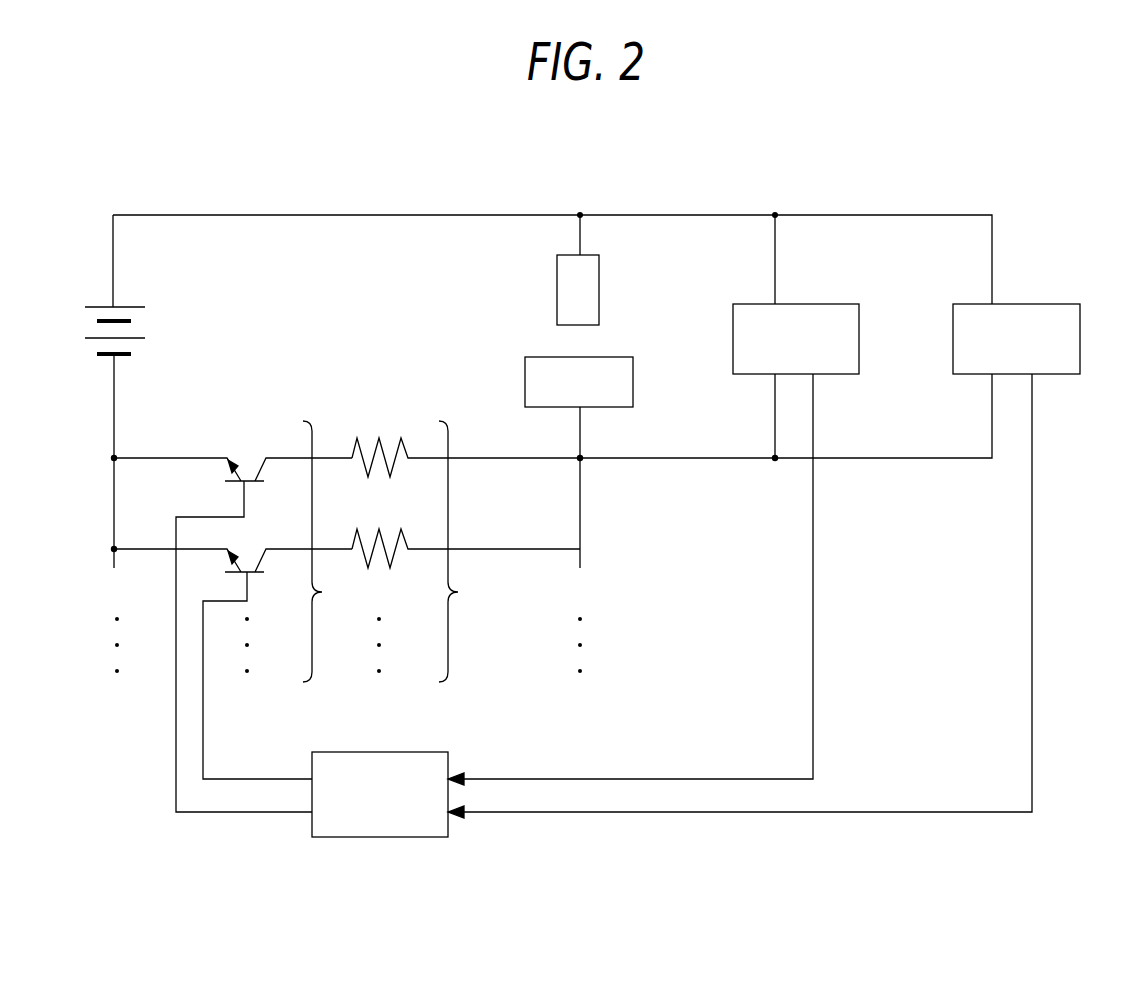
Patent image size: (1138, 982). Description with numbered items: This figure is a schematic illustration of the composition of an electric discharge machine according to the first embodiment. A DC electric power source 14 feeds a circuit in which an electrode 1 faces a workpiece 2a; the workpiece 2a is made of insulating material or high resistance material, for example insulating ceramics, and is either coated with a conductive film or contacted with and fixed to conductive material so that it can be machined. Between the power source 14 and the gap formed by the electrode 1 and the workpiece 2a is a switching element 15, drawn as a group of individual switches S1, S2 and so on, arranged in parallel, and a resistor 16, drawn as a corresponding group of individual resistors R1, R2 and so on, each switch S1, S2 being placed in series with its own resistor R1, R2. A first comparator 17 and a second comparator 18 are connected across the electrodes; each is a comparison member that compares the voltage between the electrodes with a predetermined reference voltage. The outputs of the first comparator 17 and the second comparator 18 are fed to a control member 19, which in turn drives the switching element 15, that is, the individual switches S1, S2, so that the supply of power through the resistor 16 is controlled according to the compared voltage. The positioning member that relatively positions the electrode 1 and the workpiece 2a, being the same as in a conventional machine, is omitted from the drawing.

The DC electric power source 14 is at (128, 305).
The electrode 1 is at (599, 287).
The workpiece 2a is at (633, 380).
The switching element 15 is at (331, 551).
The resistor 16 is at (466, 551).
The first comparator 17 is at (859, 338).
The second comparator 18 is at (1080, 338).
The control member 19 is at (380, 752).
The first switch transistor S1 is at (233, 622).
The second switch transistor S2 is at (233, 650).
The first resistor R1 is at (563, 453).
The second resistor R2 is at (466, 543).